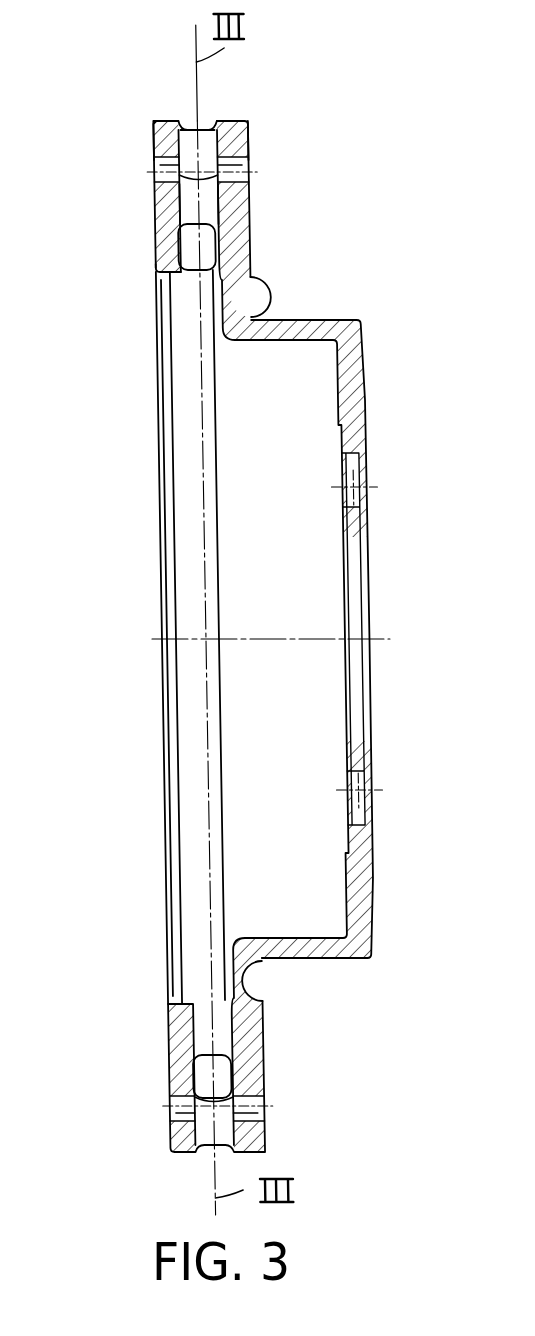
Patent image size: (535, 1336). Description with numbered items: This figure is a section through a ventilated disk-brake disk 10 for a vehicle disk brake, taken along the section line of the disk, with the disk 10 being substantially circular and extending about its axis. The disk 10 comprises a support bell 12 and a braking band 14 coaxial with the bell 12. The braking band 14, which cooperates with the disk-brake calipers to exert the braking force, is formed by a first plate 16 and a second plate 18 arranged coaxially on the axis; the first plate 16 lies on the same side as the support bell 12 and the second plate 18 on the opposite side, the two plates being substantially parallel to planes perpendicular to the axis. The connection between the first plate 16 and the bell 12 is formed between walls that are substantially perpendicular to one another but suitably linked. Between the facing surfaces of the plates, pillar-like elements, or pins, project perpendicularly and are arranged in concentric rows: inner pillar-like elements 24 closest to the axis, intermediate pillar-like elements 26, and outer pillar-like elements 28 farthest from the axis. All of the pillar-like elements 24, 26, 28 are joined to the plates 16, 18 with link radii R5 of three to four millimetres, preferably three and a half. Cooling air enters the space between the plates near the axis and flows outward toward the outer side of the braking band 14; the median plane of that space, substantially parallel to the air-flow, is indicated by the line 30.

The disk-brake disk 10 is at (235, 609).
The support bell 12 is at (362, 377).
The braking band 14 is at (190, 578).
The first plate 16 is at (243, 121).
The second plate 18 is at (156, 124).
The inner pillar-like elements 24 is at (212, 248).
The intermediate pillar-like elements 26 is at (208, 207).
The outer pillar-like elements 28 is at (193, 122).
The median plane of the space 30 is at (158, 270).
The link radii R5 is at (210, 118).